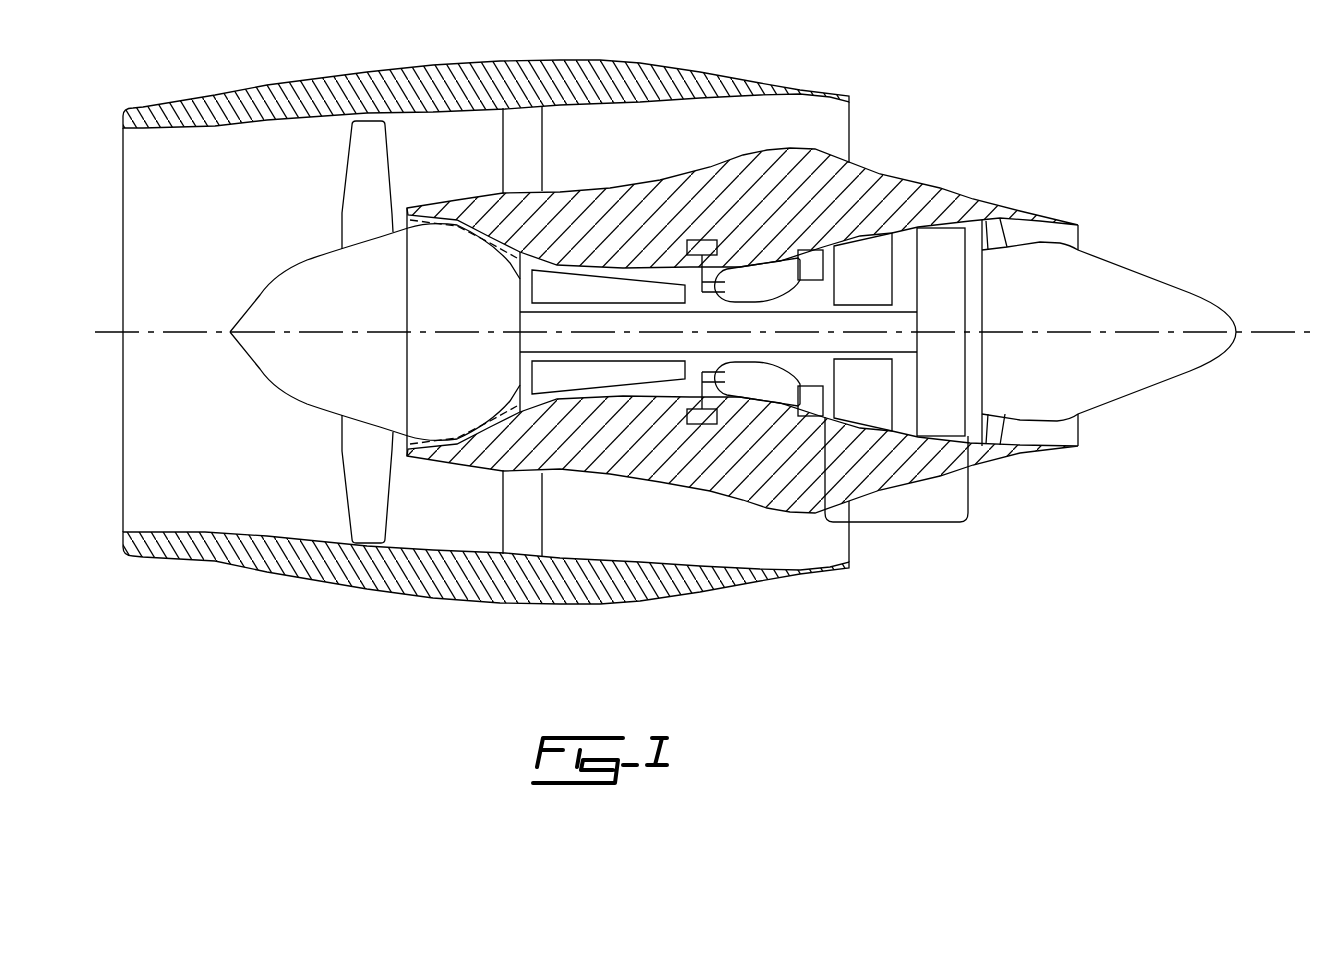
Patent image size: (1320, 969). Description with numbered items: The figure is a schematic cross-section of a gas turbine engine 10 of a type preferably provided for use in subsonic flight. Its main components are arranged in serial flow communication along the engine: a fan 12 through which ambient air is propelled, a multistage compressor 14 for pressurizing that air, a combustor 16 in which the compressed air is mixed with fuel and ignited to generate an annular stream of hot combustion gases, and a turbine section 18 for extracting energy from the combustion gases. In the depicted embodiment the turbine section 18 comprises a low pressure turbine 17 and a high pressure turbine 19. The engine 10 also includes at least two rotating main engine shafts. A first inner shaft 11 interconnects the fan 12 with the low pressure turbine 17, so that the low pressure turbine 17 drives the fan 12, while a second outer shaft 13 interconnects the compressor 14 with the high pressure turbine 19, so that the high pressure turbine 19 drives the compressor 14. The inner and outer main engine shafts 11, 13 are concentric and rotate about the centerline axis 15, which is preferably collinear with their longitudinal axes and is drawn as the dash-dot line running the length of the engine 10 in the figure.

The gas turbine engine 10 is at (968, 146).
The first inner shaft 11 is at (910, 313).
The fan 12 is at (363, 468).
The second outer shaft 13 is at (810, 302).
The multistage compressor 14 is at (587, 283).
The centerline axis 15 is at (1268, 330).
The combustor 16 is at (767, 388).
The low pressure turbine 17 is at (943, 250).
The turbine section 18 is at (897, 522).
The high pressure turbine 19 is at (877, 263).